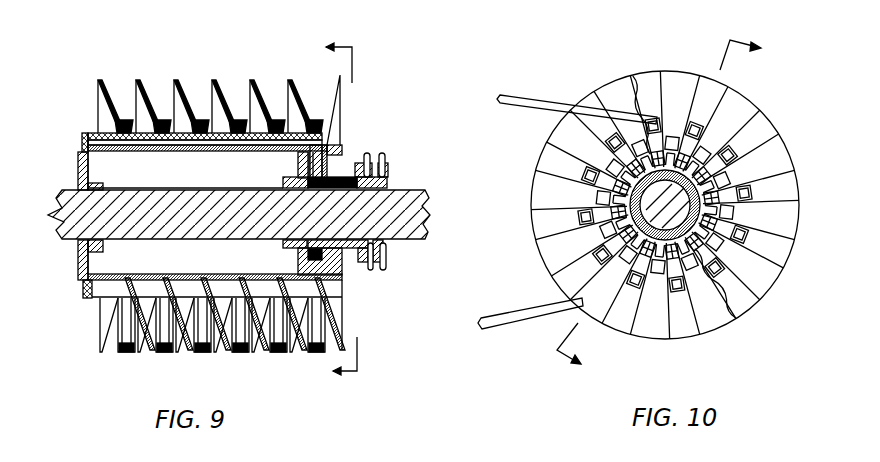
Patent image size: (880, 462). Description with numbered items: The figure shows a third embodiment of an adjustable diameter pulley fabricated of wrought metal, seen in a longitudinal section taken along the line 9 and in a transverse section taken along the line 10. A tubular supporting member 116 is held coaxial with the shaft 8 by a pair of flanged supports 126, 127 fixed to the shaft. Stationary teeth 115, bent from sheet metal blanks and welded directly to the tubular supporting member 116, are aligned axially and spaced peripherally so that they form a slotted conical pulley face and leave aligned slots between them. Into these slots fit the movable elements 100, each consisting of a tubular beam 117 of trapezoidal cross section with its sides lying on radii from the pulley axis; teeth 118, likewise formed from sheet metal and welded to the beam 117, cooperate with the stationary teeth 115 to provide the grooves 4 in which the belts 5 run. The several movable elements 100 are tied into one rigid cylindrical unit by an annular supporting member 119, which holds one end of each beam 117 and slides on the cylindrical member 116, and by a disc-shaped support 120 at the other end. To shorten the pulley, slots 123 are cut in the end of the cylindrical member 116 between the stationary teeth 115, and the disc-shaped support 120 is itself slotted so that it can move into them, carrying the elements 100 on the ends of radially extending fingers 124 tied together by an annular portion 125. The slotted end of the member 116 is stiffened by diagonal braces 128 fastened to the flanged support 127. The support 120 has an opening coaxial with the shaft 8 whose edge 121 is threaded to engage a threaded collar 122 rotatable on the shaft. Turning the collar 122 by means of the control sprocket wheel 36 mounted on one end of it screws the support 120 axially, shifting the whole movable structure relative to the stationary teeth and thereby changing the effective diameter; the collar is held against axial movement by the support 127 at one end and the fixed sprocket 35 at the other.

In FIG. 9, the belt grooves 4 is at (200, 90).
In FIG. 9, the belts 5 is at (280, 348).
In FIG. 10, the belts 5 is at (517, 94).
In FIG. 9, the shaft 8 is at (402, 230).
In FIG. 10, the shaft 8 is at (672, 183).
In FIG. 10, the section line 9— 9 is at (665, 210).
In FIG. 9, the section line 10— 10 is at (328, 212).
In FIG. 9, the fixed sprocket 35 is at (387, 177).
In FIG. 9, the control sprocket wheel 36 is at (388, 164).
In FIG. 9, the movable elements 100 is at (98, 94).
In FIG. 9, the stationary teeth 115 is at (232, 348).
In FIG. 10, the stationary teeth 115 is at (677, 72).
In FIG. 9, the tubular supporting member 116 is at (238, 146).
In FIG. 10, the tubular supporting member 116 is at (627, 82).
In FIG. 9, the tubular beam 117 is at (166, 141).
In FIG. 10, the tubular beam 117 is at (557, 212).
In FIG. 9, the teeth 118 is at (292, 82).
In FIG. 10, the teeth 118 is at (555, 280).
In FIG. 9, the annular supporting member 119 is at (82, 138).
In FIG. 9, the disc-shaped support 120 is at (327, 158).
In FIG. 10, the disc-shaped support 120 is at (734, 133).
In FIG. 9, the edge of the opening 121 is at (300, 253).
In FIG. 9, the threaded collar 122 is at (362, 258).
In FIG. 10, the threaded collar 122 is at (723, 166).
In FIG. 9, the slots 123 is at (323, 148).
In FIG. 9, the radially extending fingers 124 is at (326, 282).
In FIG. 10, the radially extending fingers 124 is at (725, 195).
In FIG. 9, the annular portion 125 is at (326, 258).
In FIG. 10, the annular portion 125 is at (703, 210).
In FIG. 9, the flanged support 126 is at (78, 168).
In FIG. 9, the flanged support 127 is at (300, 161).
In FIG. 9, the diagonal braces 128 is at (325, 163).
In FIG. 10, the diagonal braces 128 is at (727, 315).